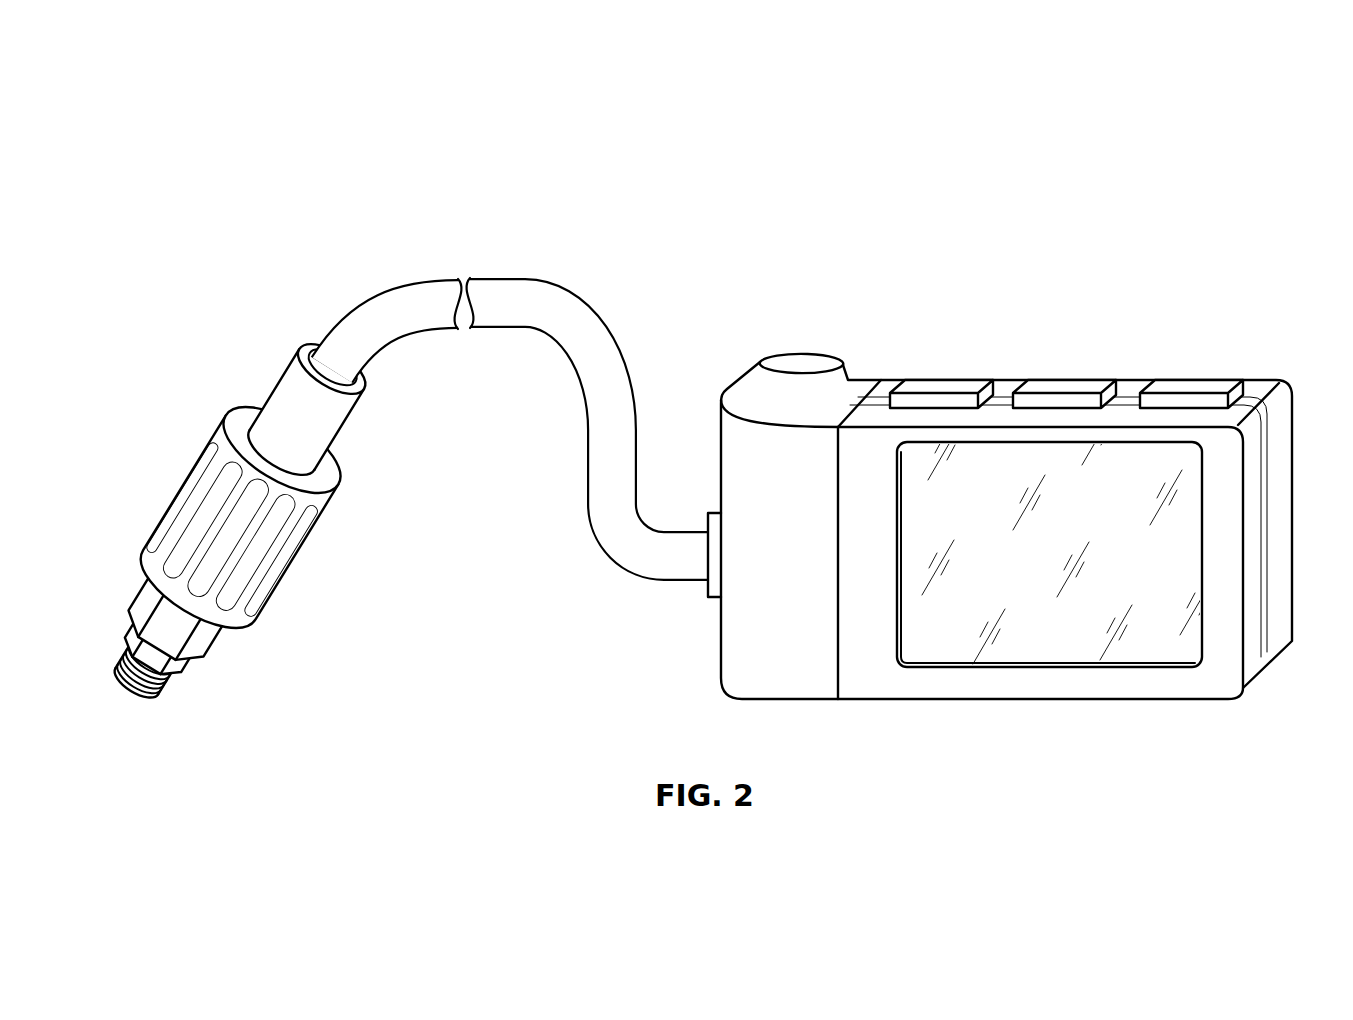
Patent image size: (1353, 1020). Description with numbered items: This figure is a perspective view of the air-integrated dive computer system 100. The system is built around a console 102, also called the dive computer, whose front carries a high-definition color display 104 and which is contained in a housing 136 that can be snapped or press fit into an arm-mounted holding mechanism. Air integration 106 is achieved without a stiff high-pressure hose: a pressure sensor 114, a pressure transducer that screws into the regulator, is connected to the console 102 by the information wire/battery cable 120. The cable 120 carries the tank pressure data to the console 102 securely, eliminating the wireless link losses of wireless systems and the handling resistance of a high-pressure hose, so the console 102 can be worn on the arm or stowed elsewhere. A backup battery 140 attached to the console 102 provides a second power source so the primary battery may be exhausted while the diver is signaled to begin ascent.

The dive computer system 100 is at (992, 399).
The console 102 is at (1010, 453).
The high-definition color display 104 is at (1133, 453).
The air integration 106 is at (392, 414).
The pressure sensor 114 is at (182, 487).
The cable 120 is at (563, 310).
The housing 136 is at (1223, 447).
The backup battery 140 is at (743, 672).